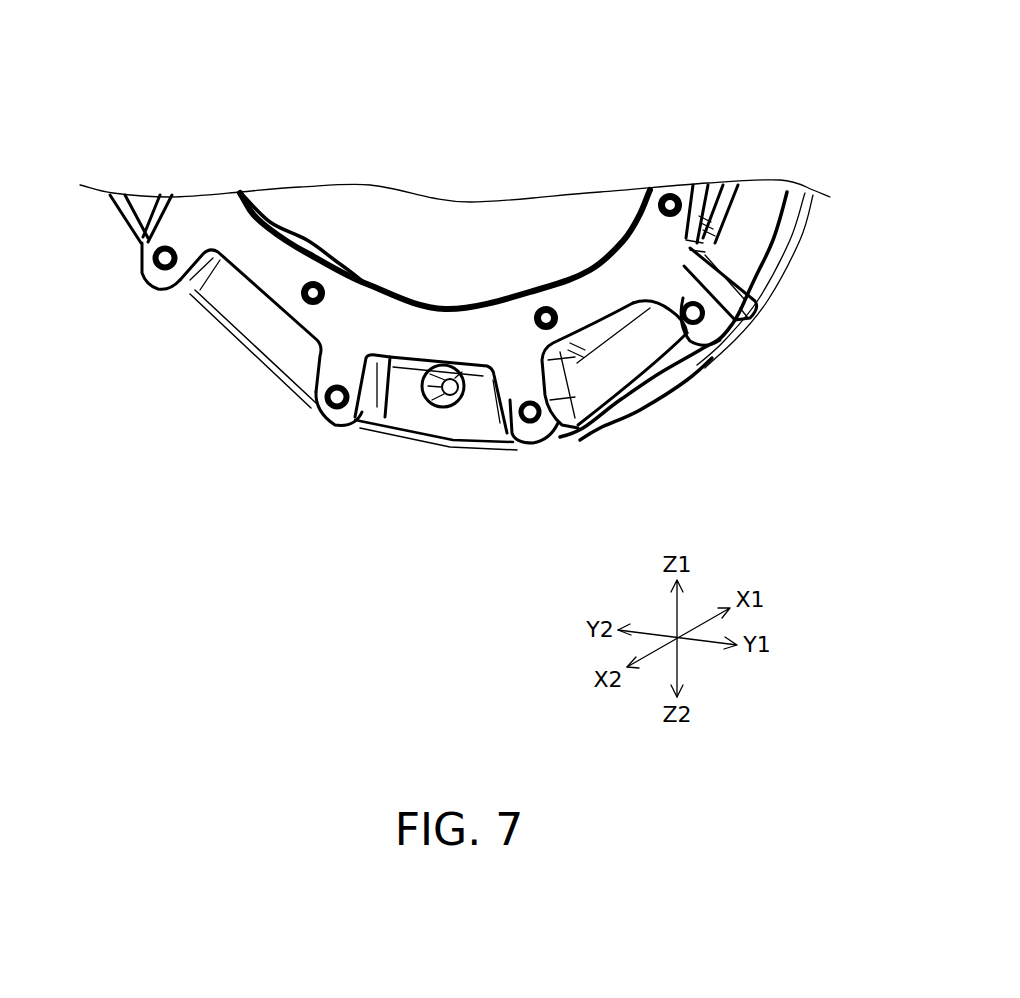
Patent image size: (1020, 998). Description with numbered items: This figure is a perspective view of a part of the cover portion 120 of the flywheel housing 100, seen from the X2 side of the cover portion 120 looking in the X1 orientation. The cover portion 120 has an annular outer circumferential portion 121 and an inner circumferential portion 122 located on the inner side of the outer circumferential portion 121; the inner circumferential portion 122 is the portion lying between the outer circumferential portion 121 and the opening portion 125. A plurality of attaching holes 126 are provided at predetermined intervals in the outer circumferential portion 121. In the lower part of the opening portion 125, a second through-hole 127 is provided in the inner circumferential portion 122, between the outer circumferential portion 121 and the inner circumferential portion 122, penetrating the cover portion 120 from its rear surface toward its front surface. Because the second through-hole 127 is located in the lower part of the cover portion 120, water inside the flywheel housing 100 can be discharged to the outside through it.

The flywheel housing 100 is at (712, 98).
The cover portion 120 is at (793, 263).
The outer circumferential portion 121 is at (270, 347).
The inner circumferential portion 122 is at (262, 265).
The opening portion 125 is at (462, 215).
The attaching holes 126 is at (162, 263).
The second through-hole 127 is at (448, 392).